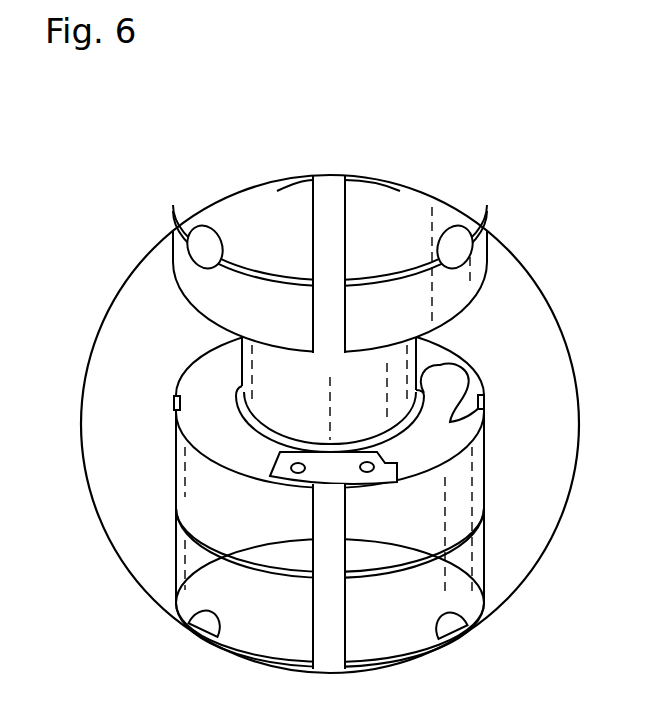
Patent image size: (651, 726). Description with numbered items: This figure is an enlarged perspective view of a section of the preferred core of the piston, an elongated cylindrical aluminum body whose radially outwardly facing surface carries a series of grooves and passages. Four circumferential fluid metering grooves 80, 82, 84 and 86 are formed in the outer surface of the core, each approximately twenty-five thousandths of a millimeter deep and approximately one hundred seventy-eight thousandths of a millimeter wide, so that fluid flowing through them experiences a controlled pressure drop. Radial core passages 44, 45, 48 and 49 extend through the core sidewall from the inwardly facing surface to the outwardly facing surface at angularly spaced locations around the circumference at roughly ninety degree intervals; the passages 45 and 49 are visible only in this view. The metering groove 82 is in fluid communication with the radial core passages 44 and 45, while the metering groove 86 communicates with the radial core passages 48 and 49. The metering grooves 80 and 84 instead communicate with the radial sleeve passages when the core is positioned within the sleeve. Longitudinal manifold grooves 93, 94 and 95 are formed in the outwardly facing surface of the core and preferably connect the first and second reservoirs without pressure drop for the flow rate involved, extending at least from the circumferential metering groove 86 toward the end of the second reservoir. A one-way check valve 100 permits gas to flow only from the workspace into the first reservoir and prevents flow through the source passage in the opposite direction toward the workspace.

The radial core passage 44 is at (203, 628).
The radial core passage 45 is at (450, 633).
The radial core passage 48 is at (207, 236).
The radial core passage 49 is at (460, 246).
The circumferential fluid metering groove 80 is at (293, 183).
The circumferential fluid metering groove 82 is at (172, 241).
The circumferential fluid metering groove 84 is at (472, 525).
The circumferential fluid metering groove 86 is at (481, 607).
The longitudinal manifold groove 93 is at (485, 403).
The longitudinal manifold groove 94 is at (335, 326).
The longitudinal manifold groove 95 is at (174, 402).
The check valve 100 is at (452, 375).